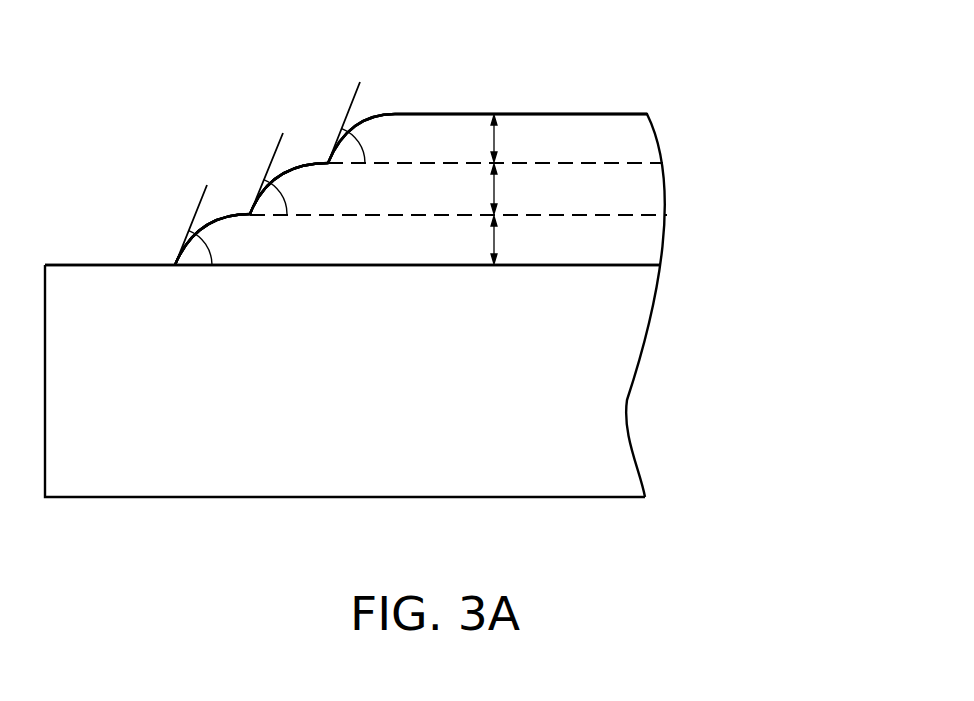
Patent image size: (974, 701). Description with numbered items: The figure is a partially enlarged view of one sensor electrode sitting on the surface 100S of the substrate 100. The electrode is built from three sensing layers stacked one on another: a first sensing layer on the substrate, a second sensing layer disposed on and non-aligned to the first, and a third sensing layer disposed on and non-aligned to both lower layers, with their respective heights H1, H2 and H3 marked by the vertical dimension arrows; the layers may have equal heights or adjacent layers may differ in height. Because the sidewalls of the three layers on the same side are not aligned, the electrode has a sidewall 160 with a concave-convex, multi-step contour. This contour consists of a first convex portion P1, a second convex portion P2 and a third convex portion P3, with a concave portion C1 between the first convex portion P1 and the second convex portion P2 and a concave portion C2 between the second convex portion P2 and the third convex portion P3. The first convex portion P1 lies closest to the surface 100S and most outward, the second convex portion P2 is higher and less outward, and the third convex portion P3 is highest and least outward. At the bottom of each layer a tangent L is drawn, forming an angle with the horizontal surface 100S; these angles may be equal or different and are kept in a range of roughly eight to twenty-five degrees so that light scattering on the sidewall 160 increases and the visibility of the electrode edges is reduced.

The substrate 100 is at (372, 462).
The surface of the substrate 100S is at (407, 265).
The sidewall 160 is at (113, 107).
The first convex portion P1 is at (218, 220).
The second convex portion P2 is at (295, 166).
The third convex portion P3 is at (374, 119).
The concave portion C1 is at (248, 212).
The concave portion C2 is at (322, 158).
The tangent L is at (210, 210).
The height H1 is at (515, 240).
The height H2 is at (517, 189).
The height H3 is at (517, 138).